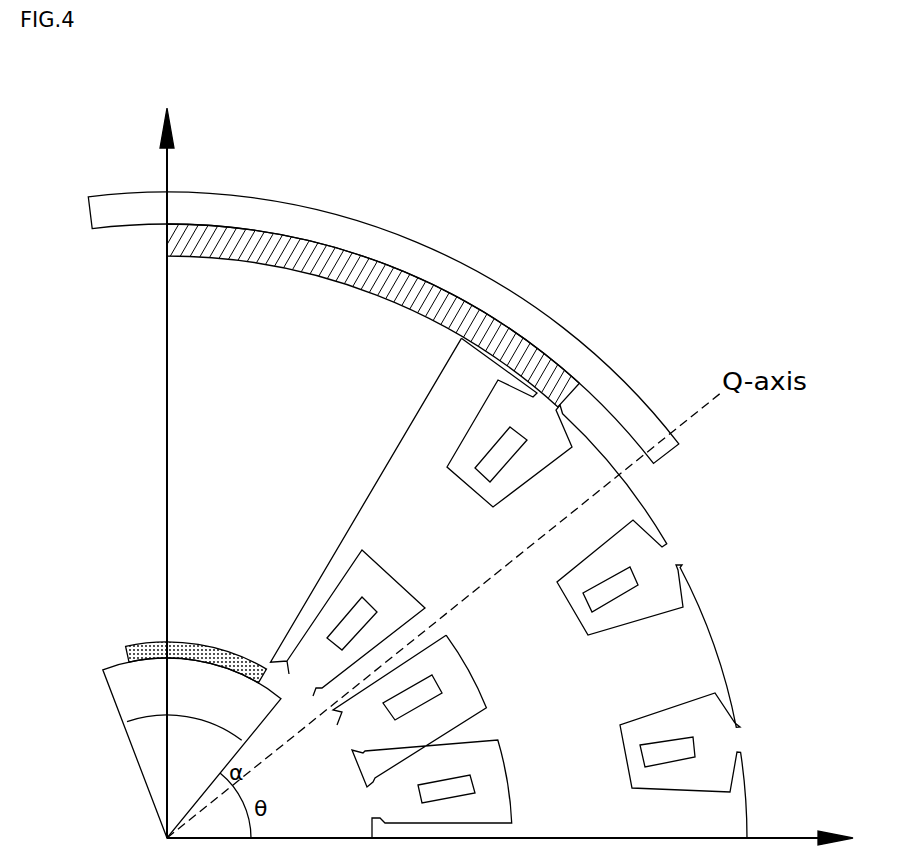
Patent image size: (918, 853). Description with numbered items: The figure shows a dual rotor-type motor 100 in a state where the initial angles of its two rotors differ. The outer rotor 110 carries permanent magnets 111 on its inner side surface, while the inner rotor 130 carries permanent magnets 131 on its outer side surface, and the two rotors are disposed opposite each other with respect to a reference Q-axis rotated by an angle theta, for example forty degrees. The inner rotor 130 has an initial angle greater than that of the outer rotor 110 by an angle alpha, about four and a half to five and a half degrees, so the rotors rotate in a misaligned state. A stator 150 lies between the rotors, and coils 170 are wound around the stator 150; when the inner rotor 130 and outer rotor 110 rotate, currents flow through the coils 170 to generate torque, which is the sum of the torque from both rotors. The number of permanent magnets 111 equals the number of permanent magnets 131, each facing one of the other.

The dual rotor-type motor 100 is at (638, 91).
The outer rotor 110 is at (378, 248).
The permanent magnets 111 is at (185, 238).
The inner rotor 130 is at (130, 698).
The permanent magnets 131 is at (137, 645).
The stator 150 is at (687, 655).
The coils 170 is at (495, 453).